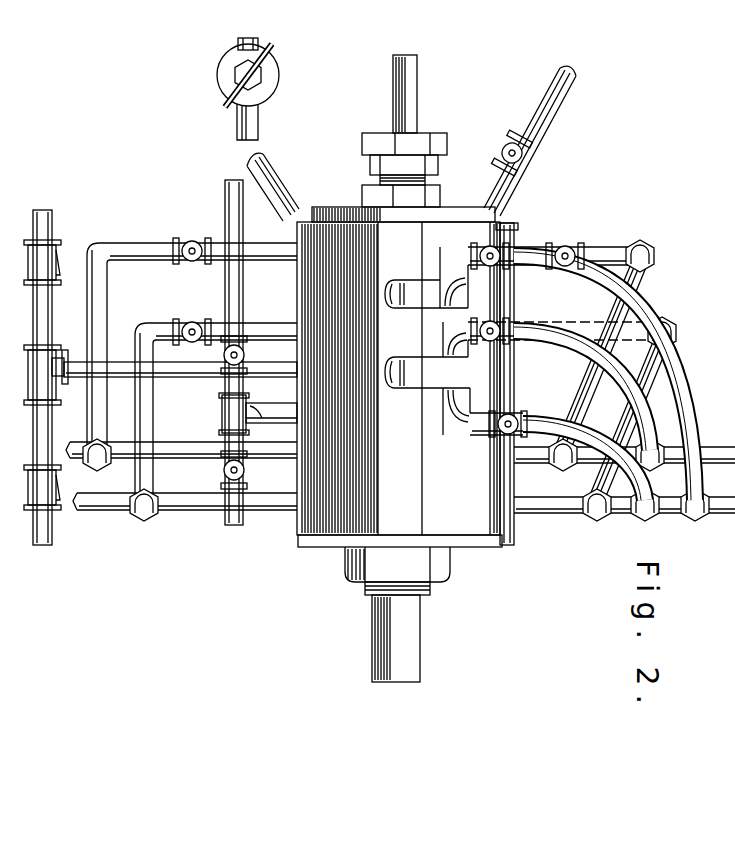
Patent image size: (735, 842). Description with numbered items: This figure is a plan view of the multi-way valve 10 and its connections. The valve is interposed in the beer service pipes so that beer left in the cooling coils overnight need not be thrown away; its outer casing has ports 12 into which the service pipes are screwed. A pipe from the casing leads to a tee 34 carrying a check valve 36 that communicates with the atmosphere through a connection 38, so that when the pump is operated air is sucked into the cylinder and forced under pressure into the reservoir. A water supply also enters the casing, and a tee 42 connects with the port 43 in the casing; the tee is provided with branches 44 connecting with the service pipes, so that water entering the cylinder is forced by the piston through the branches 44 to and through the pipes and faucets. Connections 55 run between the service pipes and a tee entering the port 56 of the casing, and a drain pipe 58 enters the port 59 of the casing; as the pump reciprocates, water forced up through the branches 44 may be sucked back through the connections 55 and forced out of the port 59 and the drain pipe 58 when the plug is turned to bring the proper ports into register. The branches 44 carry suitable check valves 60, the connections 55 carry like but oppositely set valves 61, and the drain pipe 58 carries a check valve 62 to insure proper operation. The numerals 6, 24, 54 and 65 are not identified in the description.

The header pipe 6 is at (540, 456).
The multi-way valve 10 is at (280, 195).
The ports 12 is at (272, 497).
The vertical connecting pipe 24 is at (100, 402).
The tee 34 is at (221, 415).
The check valve 36 is at (223, 468).
The connection 38 is at (246, 405).
The tee 42 is at (400, 384).
The port 43 is at (580, 367).
The branches 44 is at (560, 355).
The outlet elbow 54 is at (416, 290).
The connections 55 is at (679, 398).
The port 56 is at (222, 326).
The drain pipe 58 is at (563, 95).
The port 59 is at (238, 277).
The check valves 60 is at (514, 283).
The valves 61 is at (506, 224).
The check valve 62 is at (524, 159).
The elbow fitting 65 is at (643, 513).